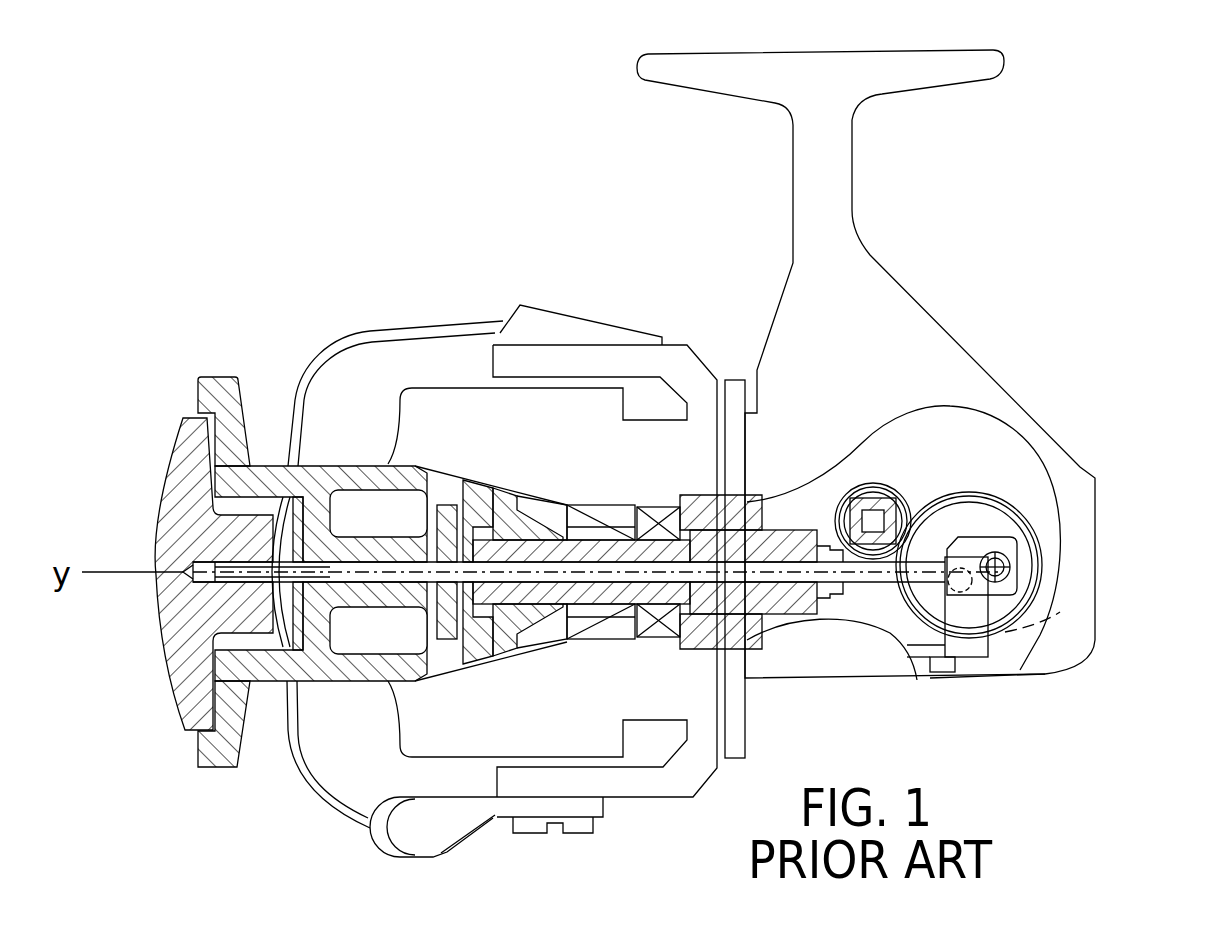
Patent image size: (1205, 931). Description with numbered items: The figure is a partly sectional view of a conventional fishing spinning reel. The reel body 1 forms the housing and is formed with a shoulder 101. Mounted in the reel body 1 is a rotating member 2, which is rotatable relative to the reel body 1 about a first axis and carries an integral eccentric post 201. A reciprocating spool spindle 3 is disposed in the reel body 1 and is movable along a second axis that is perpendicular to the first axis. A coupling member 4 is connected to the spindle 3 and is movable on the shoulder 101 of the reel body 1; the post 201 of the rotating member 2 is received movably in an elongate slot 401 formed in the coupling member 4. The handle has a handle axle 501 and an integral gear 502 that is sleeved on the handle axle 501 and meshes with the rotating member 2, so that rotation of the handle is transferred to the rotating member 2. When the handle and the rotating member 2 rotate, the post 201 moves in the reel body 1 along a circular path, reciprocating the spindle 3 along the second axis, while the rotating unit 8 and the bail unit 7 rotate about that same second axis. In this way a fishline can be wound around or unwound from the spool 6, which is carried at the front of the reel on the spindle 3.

The reel body 1 is at (1020, 382).
The rotating member 2 is at (1048, 514).
The reciprocating spool spindle 3 is at (803, 596).
The coupling member 4 is at (968, 672).
The spool 6 is at (337, 455).
The bail unit 7 is at (441, 312).
The rotating unit 8 is at (673, 328).
The shoulder 101 is at (1012, 660).
The eccentric post 201 is at (1020, 580).
The elongate slot 401 is at (1062, 615).
The handle axle 501 is at (840, 507).
The gear 502 is at (867, 483).